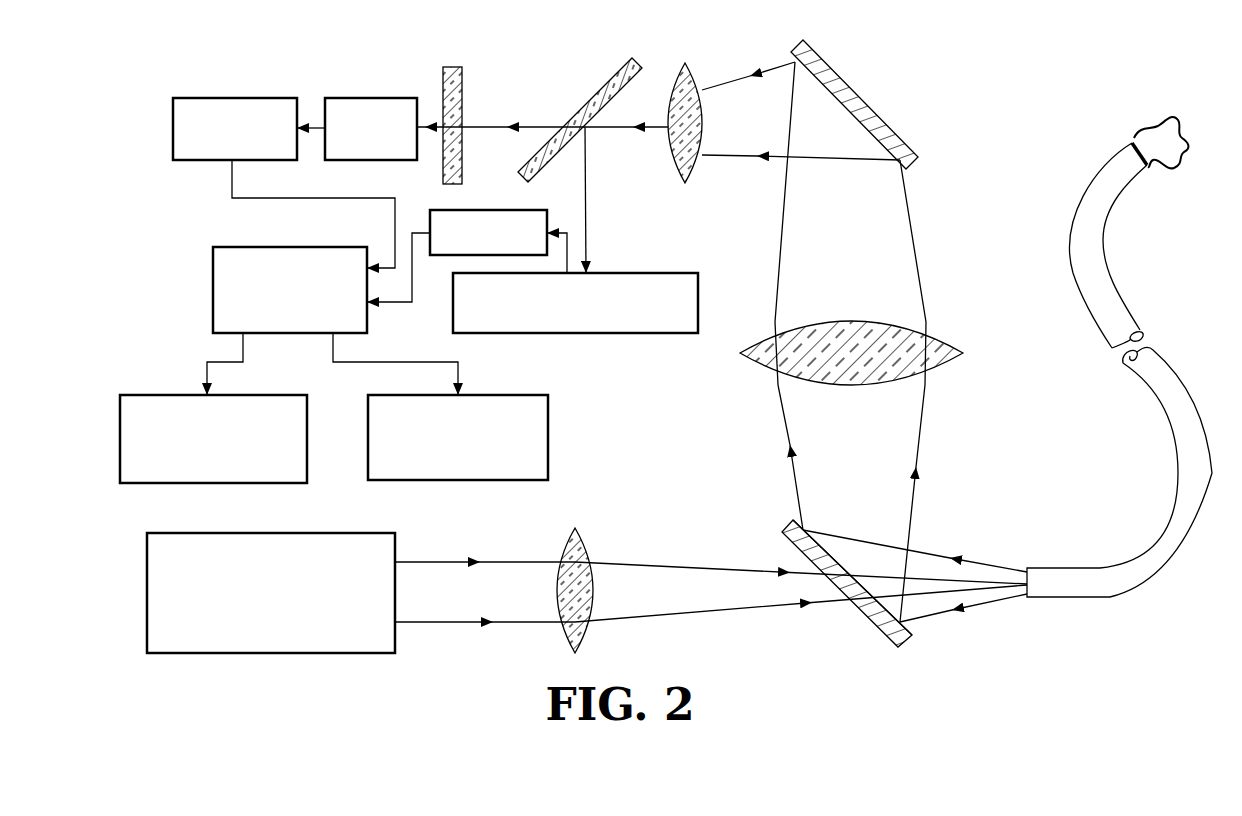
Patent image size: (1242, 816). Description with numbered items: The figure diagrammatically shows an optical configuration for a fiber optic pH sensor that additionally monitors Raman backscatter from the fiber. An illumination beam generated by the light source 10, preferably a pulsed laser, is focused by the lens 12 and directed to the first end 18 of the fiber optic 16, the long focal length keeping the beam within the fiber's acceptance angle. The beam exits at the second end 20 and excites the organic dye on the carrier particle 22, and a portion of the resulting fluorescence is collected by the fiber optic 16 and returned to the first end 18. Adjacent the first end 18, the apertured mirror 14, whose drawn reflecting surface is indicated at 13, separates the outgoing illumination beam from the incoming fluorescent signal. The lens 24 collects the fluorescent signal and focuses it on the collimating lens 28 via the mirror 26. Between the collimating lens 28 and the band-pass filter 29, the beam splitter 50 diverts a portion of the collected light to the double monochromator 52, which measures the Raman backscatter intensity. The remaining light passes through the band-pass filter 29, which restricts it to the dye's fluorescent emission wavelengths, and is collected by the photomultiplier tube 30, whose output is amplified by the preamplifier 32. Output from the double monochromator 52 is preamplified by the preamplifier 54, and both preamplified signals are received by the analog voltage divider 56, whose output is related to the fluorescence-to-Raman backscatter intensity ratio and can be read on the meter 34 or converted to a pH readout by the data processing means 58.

The light source 10 is at (265, 623).
The lens 12 is at (597, 548).
The reflective surface of dichroic mirror 13 is at (850, 588).
The apertured mirror 14 is at (912, 637).
The fiber optic 16 is at (1097, 330).
The first end 18 is at (1046, 609).
The second end 20 is at (1052, 206).
The carrier particle 22 is at (1187, 138).
The lens 24 is at (752, 362).
The mirror 26 is at (854, 104).
The collimating lens 28 is at (689, 66).
The band-pass filter 29 is at (462, 88).
The photomultiplier tube 30 is at (372, 98).
The preamplifier 32 is at (233, 98).
The meter 34 is at (548, 420).
The beam splitter 50 is at (630, 62).
The double monochromator 52 is at (655, 273).
The preamplifier 54 is at (470, 210).
The analog voltage divider 56 is at (213, 270).
The data processing means 58 is at (173, 395).